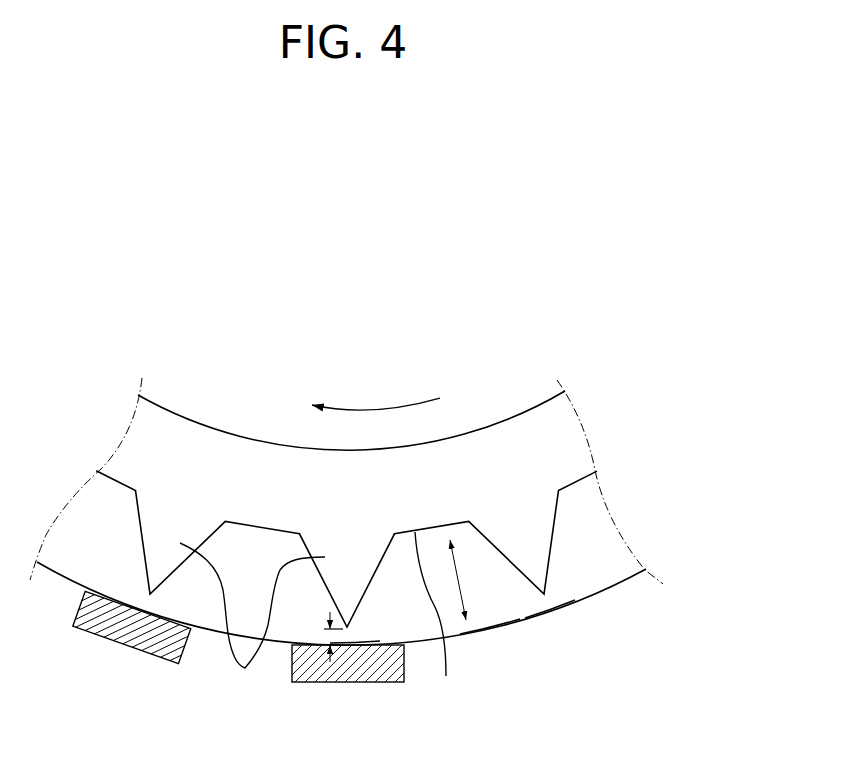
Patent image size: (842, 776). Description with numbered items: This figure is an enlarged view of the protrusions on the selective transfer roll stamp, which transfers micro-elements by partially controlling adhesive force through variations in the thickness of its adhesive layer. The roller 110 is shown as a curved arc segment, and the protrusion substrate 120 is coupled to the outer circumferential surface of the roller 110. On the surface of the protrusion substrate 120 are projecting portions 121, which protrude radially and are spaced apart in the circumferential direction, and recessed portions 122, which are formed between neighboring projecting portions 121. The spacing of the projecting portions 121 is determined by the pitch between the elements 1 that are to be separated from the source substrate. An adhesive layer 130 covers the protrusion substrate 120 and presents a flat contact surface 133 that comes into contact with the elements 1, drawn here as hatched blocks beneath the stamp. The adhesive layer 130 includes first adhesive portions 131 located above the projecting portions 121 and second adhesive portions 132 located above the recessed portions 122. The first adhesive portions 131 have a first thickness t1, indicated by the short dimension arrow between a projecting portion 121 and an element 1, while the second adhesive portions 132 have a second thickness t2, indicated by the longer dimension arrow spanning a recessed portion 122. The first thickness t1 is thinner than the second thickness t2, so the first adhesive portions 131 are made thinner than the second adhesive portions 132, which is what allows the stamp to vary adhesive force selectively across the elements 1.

The roller 110 is at (491, 400).
The protrusion substrate 120 is at (563, 446).
The projecting portions 121 is at (252, 622).
The recessed portions 122 is at (440, 620).
The adhesive layer 130 is at (585, 553).
The first adhesive portions 131 is at (362, 628).
The second adhesive portions 132 is at (480, 605).
The flat contact surface 133 is at (550, 611).
The elements 1 is at (137, 635).
The first thickness t1 is at (328, 641).
The second thickness t2 is at (460, 582).